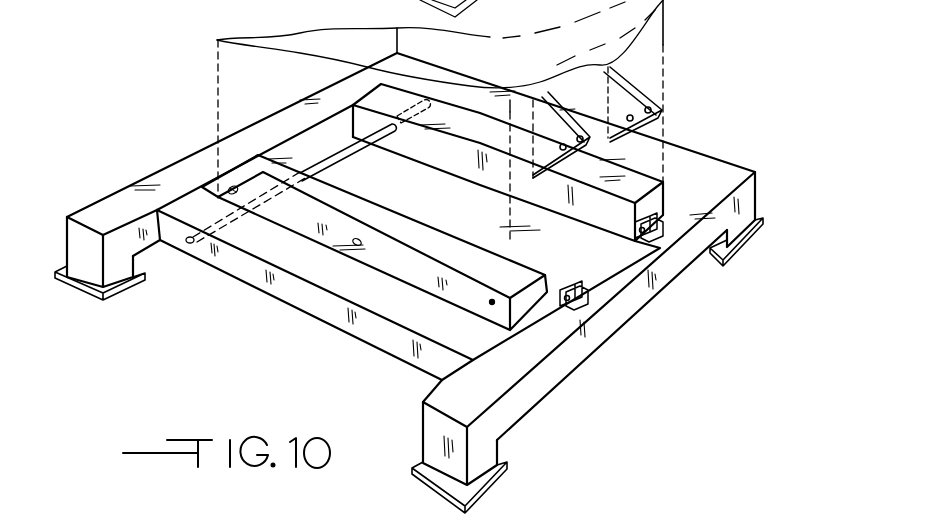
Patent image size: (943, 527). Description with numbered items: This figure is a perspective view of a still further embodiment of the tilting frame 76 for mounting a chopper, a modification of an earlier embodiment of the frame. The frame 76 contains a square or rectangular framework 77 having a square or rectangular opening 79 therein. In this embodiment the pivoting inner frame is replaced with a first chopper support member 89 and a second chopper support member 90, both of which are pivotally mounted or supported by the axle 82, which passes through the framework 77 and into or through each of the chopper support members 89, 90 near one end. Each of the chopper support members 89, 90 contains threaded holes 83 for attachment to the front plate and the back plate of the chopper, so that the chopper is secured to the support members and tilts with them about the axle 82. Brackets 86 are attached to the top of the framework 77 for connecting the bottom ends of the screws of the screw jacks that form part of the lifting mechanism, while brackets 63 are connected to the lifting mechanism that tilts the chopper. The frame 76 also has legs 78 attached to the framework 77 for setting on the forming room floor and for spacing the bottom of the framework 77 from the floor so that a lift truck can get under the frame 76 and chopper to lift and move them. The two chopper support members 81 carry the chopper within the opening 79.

The frame 76 is at (137, 170).
The framework 77 is at (287, 108).
The legs 78 is at (125, 297).
The opening 79 is at (672, 193).
The cross beams 81 is at (473, 202).
The axle 82 is at (190, 248).
The threaded holes 83 is at (490, 302).
The brackets 86 is at (573, 307).
The first chopper support member 89 is at (250, 172).
The second chopper support member 90 is at (405, 100).
The brackets 63 is at (550, 94).